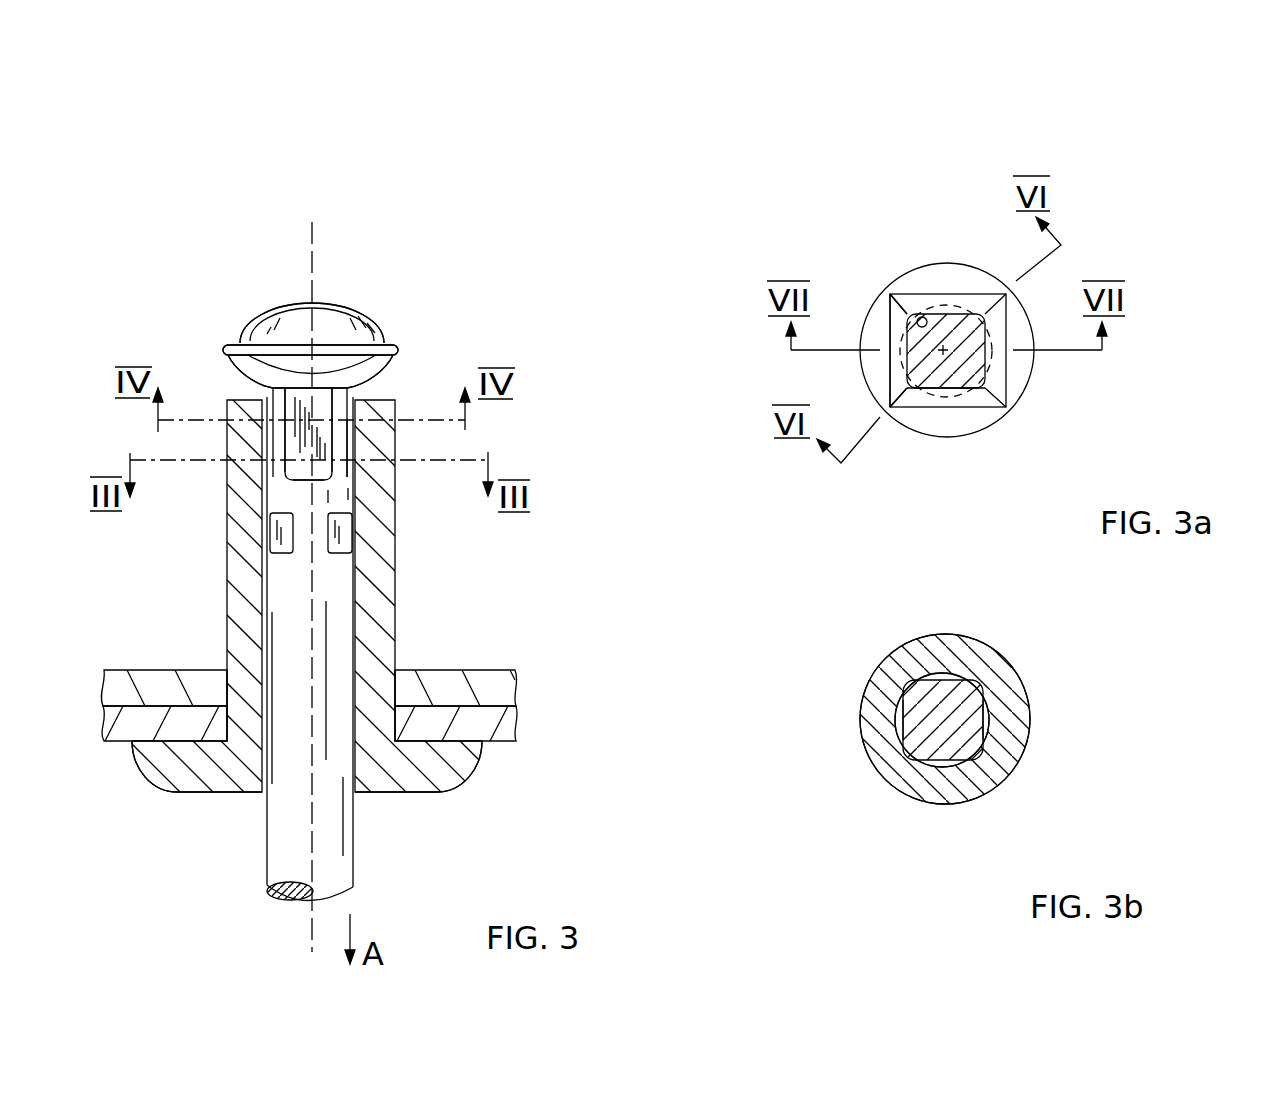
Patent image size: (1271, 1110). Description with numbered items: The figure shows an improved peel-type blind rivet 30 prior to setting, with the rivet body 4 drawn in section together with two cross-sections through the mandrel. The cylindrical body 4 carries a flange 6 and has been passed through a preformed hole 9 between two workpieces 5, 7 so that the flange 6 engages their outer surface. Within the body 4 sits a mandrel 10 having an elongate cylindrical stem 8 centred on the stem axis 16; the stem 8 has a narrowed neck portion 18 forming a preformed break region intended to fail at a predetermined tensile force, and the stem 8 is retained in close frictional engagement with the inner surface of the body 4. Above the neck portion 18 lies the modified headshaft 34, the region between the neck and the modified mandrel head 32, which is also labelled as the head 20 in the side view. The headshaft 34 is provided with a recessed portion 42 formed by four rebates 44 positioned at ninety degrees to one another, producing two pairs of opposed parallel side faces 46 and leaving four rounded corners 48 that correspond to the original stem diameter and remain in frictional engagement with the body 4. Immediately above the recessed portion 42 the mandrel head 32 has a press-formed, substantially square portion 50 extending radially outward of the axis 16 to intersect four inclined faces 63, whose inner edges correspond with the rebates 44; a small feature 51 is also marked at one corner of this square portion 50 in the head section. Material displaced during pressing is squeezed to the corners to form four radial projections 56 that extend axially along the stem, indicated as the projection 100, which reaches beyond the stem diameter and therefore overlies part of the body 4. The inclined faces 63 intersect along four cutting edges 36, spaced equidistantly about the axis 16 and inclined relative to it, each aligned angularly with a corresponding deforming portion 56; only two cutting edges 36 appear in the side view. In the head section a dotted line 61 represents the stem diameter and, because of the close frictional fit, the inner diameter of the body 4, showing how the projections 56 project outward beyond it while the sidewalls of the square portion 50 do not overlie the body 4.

In FIG. 3, the rivet body 4 is at (397, 517).
In FIG. 3B, the rivet body 4 is at (903, 795).
In FIG. 3, the workpiece 5 is at (491, 680).
In FIG. 3, the flange 6 is at (440, 772).
In FIG. 3, the workpiece 7 is at (503, 729).
In FIG. 3, the mandrel stem 8 is at (334, 625).
In FIG. 3, the preformed hole 9 is at (228, 674).
In FIG. 3, the mandrel 10 is at (212, 866).
In FIG. 3, the stem axis 16 is at (316, 233).
In FIG. 3A, the stem axis 16 is at (1007, 397).
In FIG. 3, the neck portion 18 is at (291, 537).
In FIG. 3, the pin head 20 is at (394, 386).
In FIG. 3, the blind rivet 30 is at (585, 534).
In FIG. 3, the mandrel head 32 is at (432, 352).
In FIG. 3A, the mandrel head 32 is at (868, 477).
In FIG. 3, the headshaft 34 is at (302, 500).
In FIG. 3B, the headshaft 34 is at (952, 735).
In FIG. 3, the cutting edges 36 is at (258, 382).
In FIG. 3A, the cutting edges 36 is at (904, 309).
In FIG. 3, the recessed portion 42 is at (355, 457).
In FIG. 3, the rebates 44 is at (300, 466).
In FIG. 3B, the rebates 44 is at (1000, 718).
In FIG. 3B, the side faces 46 is at (957, 668).
In FIG. 3, the rounded corners 48 is at (281, 438).
In FIG. 3B, the rounded corners 48 is at (910, 674).
In FIG. 3, the square portion 50 is at (291, 388).
In FIG. 3A, the square portion 50 is at (947, 312).
In FIG. 3A, the recess 51 is at (924, 317).
In FIG. 3A, the radial projections 56 is at (896, 322).
In FIG. 3A, the dotted line 61 is at (901, 363).
In FIG. 3, the inclined faces 63 is at (341, 371).
In FIG. 3A, the inclined faces 63 is at (893, 326).
In FIG. 3, the projection 100 is at (300, 397).